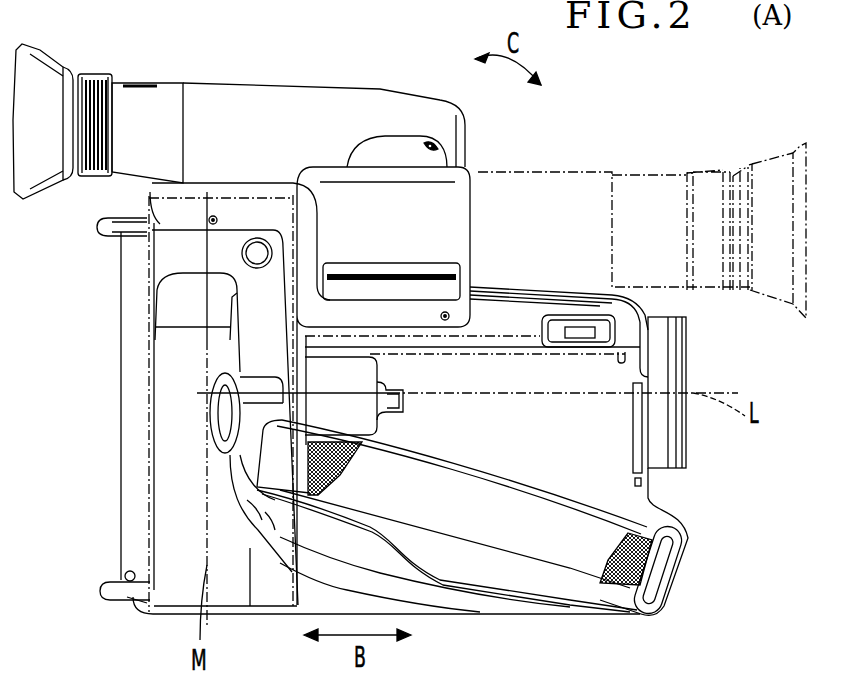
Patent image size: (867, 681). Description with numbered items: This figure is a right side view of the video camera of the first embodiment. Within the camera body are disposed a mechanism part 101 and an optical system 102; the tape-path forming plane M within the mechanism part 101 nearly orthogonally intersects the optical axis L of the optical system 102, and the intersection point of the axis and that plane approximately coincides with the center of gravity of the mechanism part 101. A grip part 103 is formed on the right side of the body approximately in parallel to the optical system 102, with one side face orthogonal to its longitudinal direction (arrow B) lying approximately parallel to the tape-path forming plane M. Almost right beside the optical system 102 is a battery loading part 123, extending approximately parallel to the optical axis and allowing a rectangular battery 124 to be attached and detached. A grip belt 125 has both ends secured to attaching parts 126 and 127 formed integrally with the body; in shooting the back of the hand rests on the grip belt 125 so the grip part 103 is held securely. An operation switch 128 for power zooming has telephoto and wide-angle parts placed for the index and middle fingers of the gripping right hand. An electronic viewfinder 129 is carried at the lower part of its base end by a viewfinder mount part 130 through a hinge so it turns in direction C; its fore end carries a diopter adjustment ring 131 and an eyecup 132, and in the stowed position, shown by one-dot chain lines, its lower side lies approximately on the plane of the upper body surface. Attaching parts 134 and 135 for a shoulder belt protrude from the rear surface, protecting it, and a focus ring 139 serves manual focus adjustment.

The mechanism part 101 is at (147, 397).
The optical system 102 is at (655, 332).
The grip part 103 is at (523, 317).
The battery loading part 123 is at (583, 350).
The battery 124 is at (650, 503).
The grip belt 125 is at (563, 555).
The attaching part 126 is at (660, 564).
The attaching part 127 is at (250, 447).
The operation switch for power zooming 128 is at (428, 285).
The electronic viewfinder 129 is at (285, 83).
The viewfinder mount part 130 is at (453, 203).
The diopter adjustment ring 131 is at (98, 78).
The eyecup 132 is at (45, 80).
The attaching part 134 is at (97, 233).
The attaching part 135 is at (100, 583).
The focus ring 139 is at (660, 438).